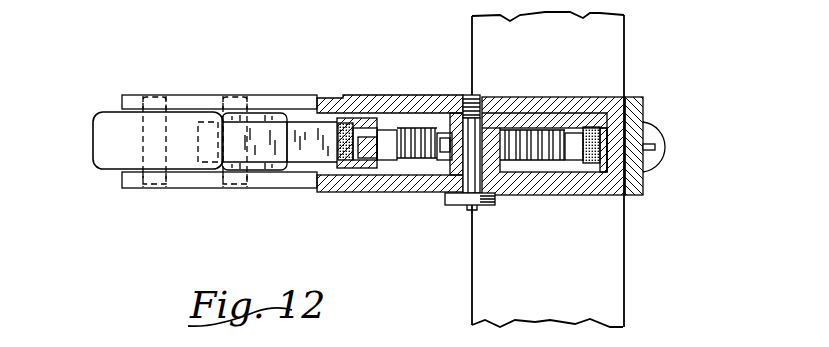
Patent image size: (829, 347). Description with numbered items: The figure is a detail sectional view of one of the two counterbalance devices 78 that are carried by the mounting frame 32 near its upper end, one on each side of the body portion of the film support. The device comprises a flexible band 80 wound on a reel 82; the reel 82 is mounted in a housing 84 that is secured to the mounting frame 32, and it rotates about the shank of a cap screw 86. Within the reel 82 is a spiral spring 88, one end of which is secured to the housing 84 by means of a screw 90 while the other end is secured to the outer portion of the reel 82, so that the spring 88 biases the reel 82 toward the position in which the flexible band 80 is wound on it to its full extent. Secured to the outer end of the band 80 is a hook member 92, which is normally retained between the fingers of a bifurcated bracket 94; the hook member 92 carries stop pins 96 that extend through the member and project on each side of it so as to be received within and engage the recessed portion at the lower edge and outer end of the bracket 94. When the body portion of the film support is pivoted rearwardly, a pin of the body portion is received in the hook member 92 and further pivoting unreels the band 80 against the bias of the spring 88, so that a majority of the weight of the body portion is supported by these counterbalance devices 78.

The mounting frame 32 is at (630, 51).
The counterbalance device 78 is at (352, 81).
The flexible band 80 is at (312, 153).
The reel 82 is at (372, 162).
The housing 84 is at (418, 97).
The cap screw 86 is at (467, 182).
The spiral spring 88 is at (397, 160).
The screw 90 is at (445, 153).
The hook member 92 is at (110, 143).
The bifurcated bracket 94 is at (267, 95).
The stop pins 96 is at (155, 94).